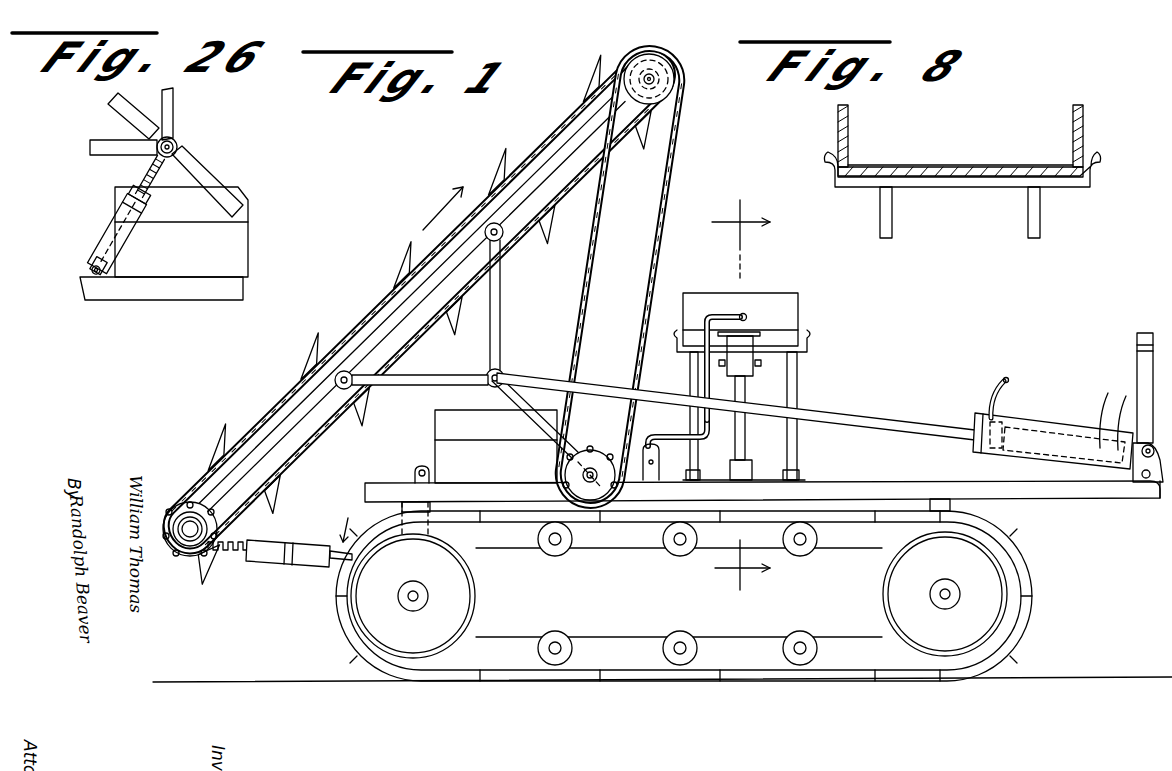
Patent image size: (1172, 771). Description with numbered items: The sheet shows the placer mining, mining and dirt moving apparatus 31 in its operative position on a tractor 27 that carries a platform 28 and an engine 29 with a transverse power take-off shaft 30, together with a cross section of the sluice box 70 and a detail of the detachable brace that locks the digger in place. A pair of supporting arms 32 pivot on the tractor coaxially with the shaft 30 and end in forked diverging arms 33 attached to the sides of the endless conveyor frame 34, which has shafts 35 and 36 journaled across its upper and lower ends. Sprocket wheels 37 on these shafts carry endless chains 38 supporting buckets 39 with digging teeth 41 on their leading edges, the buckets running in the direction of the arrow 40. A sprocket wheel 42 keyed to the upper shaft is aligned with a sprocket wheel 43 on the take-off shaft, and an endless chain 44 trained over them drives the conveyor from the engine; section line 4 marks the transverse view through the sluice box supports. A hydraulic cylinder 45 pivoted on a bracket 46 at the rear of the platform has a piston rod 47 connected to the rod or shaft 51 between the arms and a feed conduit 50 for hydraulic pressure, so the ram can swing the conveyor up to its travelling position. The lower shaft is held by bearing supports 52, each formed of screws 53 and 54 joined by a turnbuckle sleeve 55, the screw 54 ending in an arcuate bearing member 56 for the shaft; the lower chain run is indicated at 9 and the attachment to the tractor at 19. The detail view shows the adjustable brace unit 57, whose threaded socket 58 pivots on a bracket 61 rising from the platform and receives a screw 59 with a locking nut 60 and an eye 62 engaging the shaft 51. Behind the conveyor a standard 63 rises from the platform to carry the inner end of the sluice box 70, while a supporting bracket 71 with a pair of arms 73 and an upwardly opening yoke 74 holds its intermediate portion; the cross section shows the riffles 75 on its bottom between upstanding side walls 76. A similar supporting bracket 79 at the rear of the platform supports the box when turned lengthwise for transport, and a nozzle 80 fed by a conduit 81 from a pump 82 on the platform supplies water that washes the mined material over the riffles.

In FIG. 1, the section line 4 is at (741, 392).
In FIG. 1, the lower conveyor chain run 9 is at (434, 319).
In FIG. 1, the track frame attachment point 19 is at (350, 519).
In FIG. 1, the tractor 27 is at (1085, 500).
In FIG. 26, the platform 28 is at (170, 296).
In FIG. 1, the platform 28 is at (915, 483).
In FIG. 26, the prime mover or engine 29 is at (228, 256).
In FIG. 1, the prime mover or engine 29 is at (496, 446).
In FIG. 1, the power take-off shaft 30 is at (598, 498).
In FIG. 1, the placer mining, mining and dirt moving apparatus 31 is at (407, 298).
In FIG. 1, the supporting arms 32 is at (526, 395).
In FIG. 26, the diverging arms 33 is at (108, 142).
In FIG. 1, the diverging arms 33 is at (446, 386).
In FIG. 1, the endless conveyor frame 34 is at (416, 306).
In FIG. 1, the shaft 35 is at (653, 73).
In FIG. 1, the shaft 36 is at (188, 525).
In FIG. 1, the sprocket wheels 37 is at (668, 83).
In FIG. 1, the endless chains 38 is at (419, 301).
In FIG. 1, the buckets 39 is at (461, 312).
In FIG. 1, the arrow 40 is at (426, 210).
In FIG. 1, the digging teeth 41 is at (404, 262).
In FIG. 1, the sprocket wheel 42 is at (641, 64).
In FIG. 1, the sprocket wheel 43 is at (584, 492).
In FIG. 1, the endless chain 44 is at (597, 258).
In FIG. 1, the hydraulic cylinder 45 is at (1032, 420).
In FIG. 1, the bracket 46 is at (1144, 480).
In FIG. 1, the piston rod 47 is at (922, 426).
In FIG. 1, the feed conduit 50 is at (1000, 375).
In FIG. 26, the rod or shaft 51 is at (175, 142).
In FIG. 1, the rod or shaft 51 is at (500, 368).
In FIG. 1, the bearing support 52 is at (300, 572).
In FIG. 1, the screw 53 is at (684, 591).
In FIG. 1, the screw 54 is at (241, 552).
In FIG. 1, the turnbuckle sleeve 55 is at (312, 536).
In FIG. 1, the arcuate bearing member 56 is at (207, 561).
In FIG. 26, the adjustable brace unit 57 is at (116, 233).
In FIG. 26, the threaded socket 58 is at (115, 236).
In FIG. 26, the screw 59 is at (150, 176).
In FIG. 26, the locking nut 60 is at (139, 194).
In FIG. 26, the bracket 61 is at (96, 270).
In FIG. 1, the bracket 61 is at (418, 468).
In FIG. 26, the eye 62 is at (178, 142).
In FIG. 1, the standard 63 is at (748, 392).
In FIG. 8, the sluice box 70 is at (982, 166).
In FIG. 1, the sluice box 70 is at (800, 318).
In FIG. 1, the supporting bracket 71 is at (800, 358).
In FIG. 8, the arms 73 is at (1028, 205).
In FIG. 1, the arms 73 is at (700, 414).
In FIG. 8, the yoke 74 is at (1093, 184).
In FIG. 8, the riffles 75 is at (920, 165).
In FIG. 8, the side walls 76 is at (850, 110).
In FIG. 1, the supporting bracket 79 is at (1135, 336).
In FIG. 1, the nozzle 80 is at (748, 317).
In FIG. 1, the conduit 81 is at (716, 315).
In FIG. 1, the pump 82 is at (661, 462).